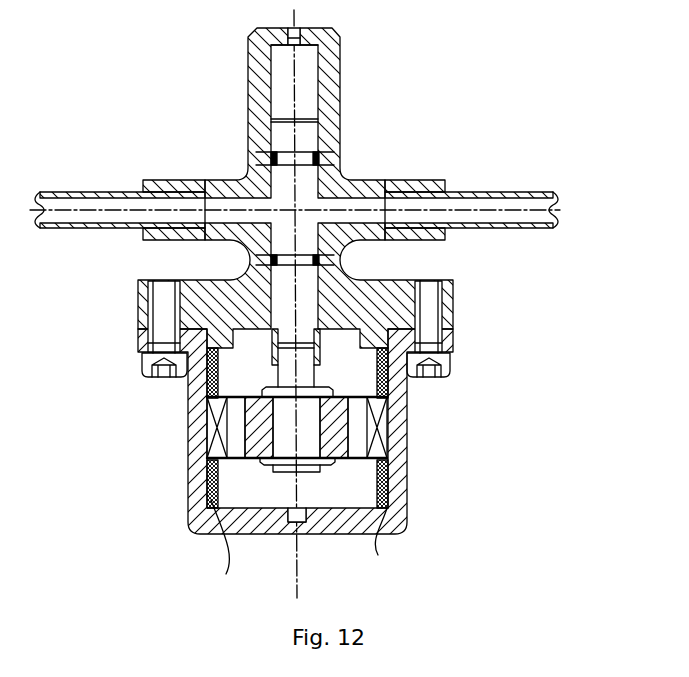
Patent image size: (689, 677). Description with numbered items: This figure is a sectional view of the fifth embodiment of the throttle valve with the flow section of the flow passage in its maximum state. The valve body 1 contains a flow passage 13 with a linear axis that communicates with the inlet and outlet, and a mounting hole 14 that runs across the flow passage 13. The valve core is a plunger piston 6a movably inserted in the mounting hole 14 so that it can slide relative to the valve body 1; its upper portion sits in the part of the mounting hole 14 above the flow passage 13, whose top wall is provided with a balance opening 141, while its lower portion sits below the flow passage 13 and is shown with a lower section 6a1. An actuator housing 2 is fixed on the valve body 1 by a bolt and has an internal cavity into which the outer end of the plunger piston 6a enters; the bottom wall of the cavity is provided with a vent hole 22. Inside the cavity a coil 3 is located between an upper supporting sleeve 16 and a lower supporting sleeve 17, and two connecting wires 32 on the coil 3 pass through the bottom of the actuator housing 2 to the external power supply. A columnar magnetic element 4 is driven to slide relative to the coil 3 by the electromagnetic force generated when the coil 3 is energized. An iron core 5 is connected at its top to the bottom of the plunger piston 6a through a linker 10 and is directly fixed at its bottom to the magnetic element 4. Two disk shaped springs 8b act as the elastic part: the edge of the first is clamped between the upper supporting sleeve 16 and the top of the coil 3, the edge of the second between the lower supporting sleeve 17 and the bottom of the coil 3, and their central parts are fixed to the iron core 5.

The valve body 1 is at (325, 82).
The balance opening 141 is at (313, 30).
The mounting hole 14 is at (282, 64).
The flow passage 13 is at (220, 207).
The plunger piston 6a is at (303, 137).
The shaft lower section 6a1 is at (320, 208).
The linker 10 is at (318, 345).
The actuator housing 2 is at (188, 515).
The vent hole 22 is at (306, 516).
The iron core 5 is at (187, 353).
The upper supporting sleeve 16 is at (410, 368).
The disk shaped springs 8b is at (207, 388).
The magnetic element 4 is at (218, 427).
The coil 3 is at (345, 427).
The lower supporting sleeve 17 is at (378, 486).
The connecting wires 32 is at (202, 578).